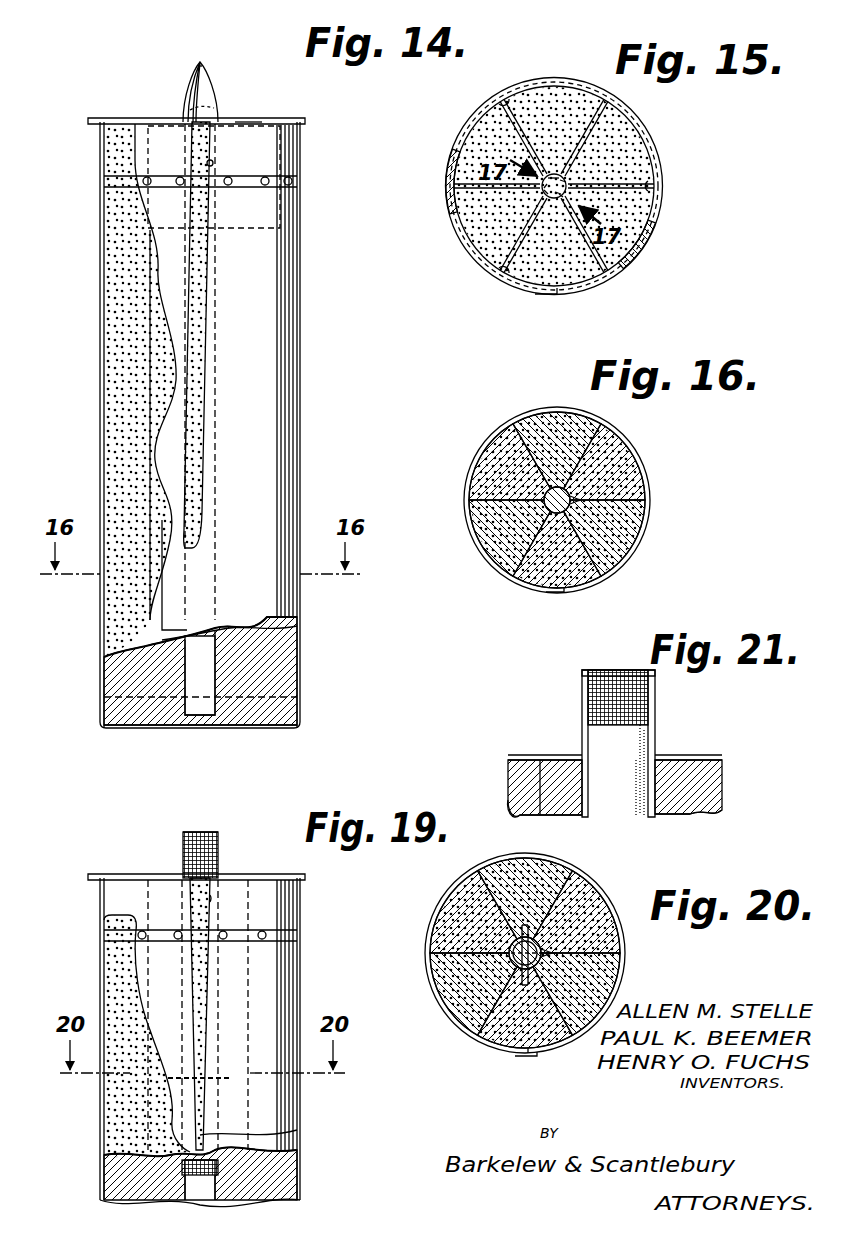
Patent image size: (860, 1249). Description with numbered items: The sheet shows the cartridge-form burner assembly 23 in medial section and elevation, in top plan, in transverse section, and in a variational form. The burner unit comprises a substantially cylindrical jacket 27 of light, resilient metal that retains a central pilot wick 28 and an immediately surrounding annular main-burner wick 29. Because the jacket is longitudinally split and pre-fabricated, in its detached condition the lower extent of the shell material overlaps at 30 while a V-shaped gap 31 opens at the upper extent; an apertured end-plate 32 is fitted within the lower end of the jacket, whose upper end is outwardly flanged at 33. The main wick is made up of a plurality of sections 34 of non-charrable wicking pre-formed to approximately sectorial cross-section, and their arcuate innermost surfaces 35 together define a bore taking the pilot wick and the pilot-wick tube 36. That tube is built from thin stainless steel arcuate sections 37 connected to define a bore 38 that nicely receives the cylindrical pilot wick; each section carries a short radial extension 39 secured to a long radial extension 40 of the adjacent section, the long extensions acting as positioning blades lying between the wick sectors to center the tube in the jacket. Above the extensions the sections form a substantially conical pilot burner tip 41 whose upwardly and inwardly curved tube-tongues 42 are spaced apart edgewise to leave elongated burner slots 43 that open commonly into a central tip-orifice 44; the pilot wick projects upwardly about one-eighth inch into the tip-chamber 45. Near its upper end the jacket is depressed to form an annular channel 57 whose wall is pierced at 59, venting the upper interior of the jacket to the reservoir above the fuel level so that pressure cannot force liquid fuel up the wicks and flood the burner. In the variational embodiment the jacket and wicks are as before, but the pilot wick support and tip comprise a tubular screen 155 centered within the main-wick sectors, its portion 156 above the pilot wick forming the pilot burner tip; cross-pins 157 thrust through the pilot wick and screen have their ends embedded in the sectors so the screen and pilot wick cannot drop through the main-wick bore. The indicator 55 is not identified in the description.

In FIG. 14, the burner assembly 23 is at (100, 420).
In FIG. 15, the burner assembly 23 is at (478, 280).
In FIG. 16, the burner assembly 23 is at (500, 588).
In FIG. 19, the burner assembly 23 is at (100, 1000).
In FIG. 20, the burner assembly 23 is at (490, 1056).
In FIG. 14, the jacket 27 is at (100, 240).
In FIG. 15, the jacket 27 is at (650, 234).
In FIG. 16, the jacket 27 is at (617, 452).
In FIG. 21, the jacket 27 is at (705, 757).
In FIG. 19, the jacket 27 is at (100, 966).
In FIG. 20, the jacket 27 is at (448, 897).
In FIG. 14, the pilot wick 28 is at (224, 140).
In FIG. 16, the pilot wick 28 is at (568, 490).
In FIG. 21, the pilot wick 28 is at (656, 740).
In FIG. 19, the pilot wick 28 is at (182, 1000).
In FIG. 20, the pilot wick 28 is at (498, 984).
In FIG. 14, the main-burner wick 29 is at (108, 300).
In FIG. 15, the main-burner wick 29 is at (490, 122).
In FIG. 16, the main-burner wick 29 is at (490, 456).
In FIG. 21, the main-burner wick 29 is at (706, 790).
In FIG. 19, the main-burner wick 29 is at (120, 1176).
In FIG. 20, the main-burner wick 29 is at (440, 930).
In FIG. 14, the overlap 30 is at (180, 575).
In FIG. 16, the overlap 30 is at (548, 594).
In FIG. 20, the overlap 30 is at (516, 1058).
In FIG. 14, the V-shaped gap 31 is at (214, 163).
In FIG. 15, the V-shaped gap 31 is at (547, 296).
In FIG. 19, the V-shaped gap 31 is at (212, 900).
In FIG. 20, the V-shaped gap 31 is at (532, 1058).
In FIG. 14, the end-plate 32 is at (262, 728).
In FIG. 14, the flange 33 is at (98, 119).
In FIG. 15, the flange 33 is at (621, 276).
In FIG. 19, the flange 33 is at (88, 876).
In FIG. 15, the wick sections 34 is at (462, 158).
In FIG. 16, the wick sections 34 is at (536, 418).
In FIG. 21, the wick sections 34 is at (535, 764).
In FIG. 19, the wick sections 34 is at (192, 890).
In FIG. 20, the wick sections 34 is at (493, 868).
In FIG. 15, the innermost surfaces 35 is at (559, 174).
In FIG. 16, the innermost surfaces 35 is at (572, 506).
In FIG. 20, the innermost surfaces 35 is at (546, 968).
In FIG. 14, the pilot-wick tube 36 is at (252, 126).
In FIG. 15, the pilot-wick tube 36 is at (555, 200).
In FIG. 14, the arcuate sections 37 is at (186, 215).
In FIG. 15, the arcuate sections 37 is at (540, 208).
In FIG. 15, the bore 38 is at (542, 190).
In FIG. 15, the short radial extension 39 is at (561, 212).
In FIG. 14, the long radial extension 40 is at (150, 126).
In FIG. 15, the long radial extension 40 is at (513, 94).
In FIG. 14, the pilot burner tip 41 is at (186, 90).
In FIG. 15, the pilot burner tip 41 is at (575, 184).
In FIG. 14, the tube-tongues 42 is at (200, 62).
In FIG. 15, the tube-tongues 42 is at (571, 178).
In FIG. 14, the burner slots 43 is at (201, 90).
In FIG. 15, the burner slots 43 is at (555, 176).
In FIG. 14, the tip-orifice 44 is at (204, 64).
In FIG. 15, the tip-orifice 44 is at (575, 188).
In FIG. 14, the tip-chamber 45 is at (212, 82).
In FIG. 19, the screen cap 55 is at (220, 830).
In FIG. 14, the annular channel 57 is at (298, 183).
In FIG. 19, the annular channel 57 is at (297, 926).
In FIG. 14, the piercings 59 is at (104, 184).
In FIG. 19, the piercings 59 is at (104, 936).
In FIG. 21, the tubular screen 155 is at (660, 703).
In FIG. 19, the tubular screen 155 is at (222, 1168).
In FIG. 20, the tubular screen 155 is at (545, 945).
In FIG. 21, the screen portion 156 is at (582, 694).
In FIG. 19, the screen portion 156 is at (206, 856).
In FIG. 19, the cross-pins 157 is at (206, 1078).
In FIG. 20, the cross-pins 157 is at (526, 926).